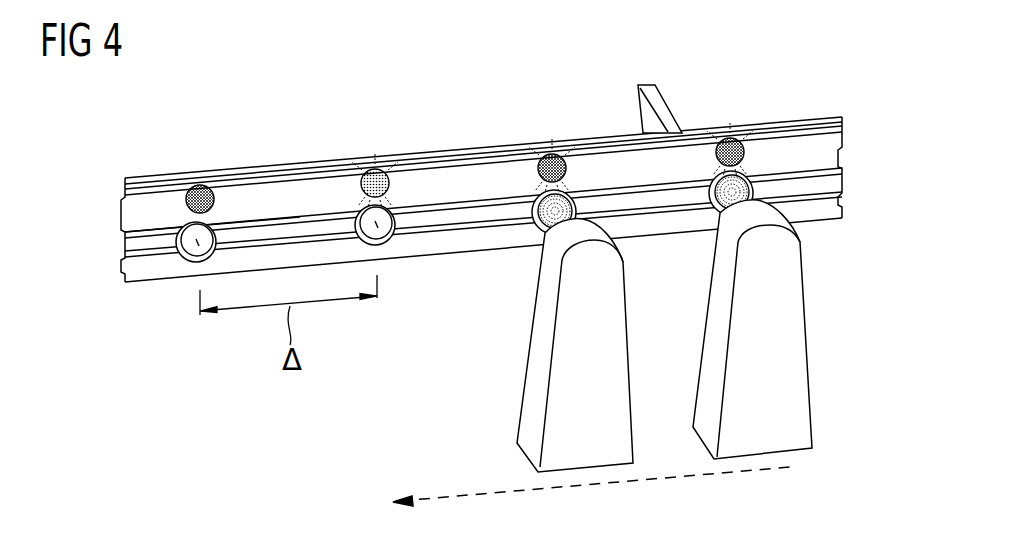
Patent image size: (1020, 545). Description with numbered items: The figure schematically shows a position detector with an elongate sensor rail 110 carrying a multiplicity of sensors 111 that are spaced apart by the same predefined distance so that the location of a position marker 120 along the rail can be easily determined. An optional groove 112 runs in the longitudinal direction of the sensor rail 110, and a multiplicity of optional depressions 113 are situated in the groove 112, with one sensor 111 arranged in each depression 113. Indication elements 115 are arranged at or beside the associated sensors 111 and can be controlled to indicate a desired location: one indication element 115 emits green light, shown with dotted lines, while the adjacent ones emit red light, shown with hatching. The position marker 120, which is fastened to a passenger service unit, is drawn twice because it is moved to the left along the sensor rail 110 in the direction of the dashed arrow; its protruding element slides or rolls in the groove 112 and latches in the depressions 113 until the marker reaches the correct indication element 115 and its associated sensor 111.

The sensor rail 110 is at (788, 118).
The sensor 111 is at (198, 240).
The groove 112 is at (120, 247).
The depression 113 is at (190, 229).
The indication element 115 is at (546, 158).
The position marker 120 is at (828, 303).